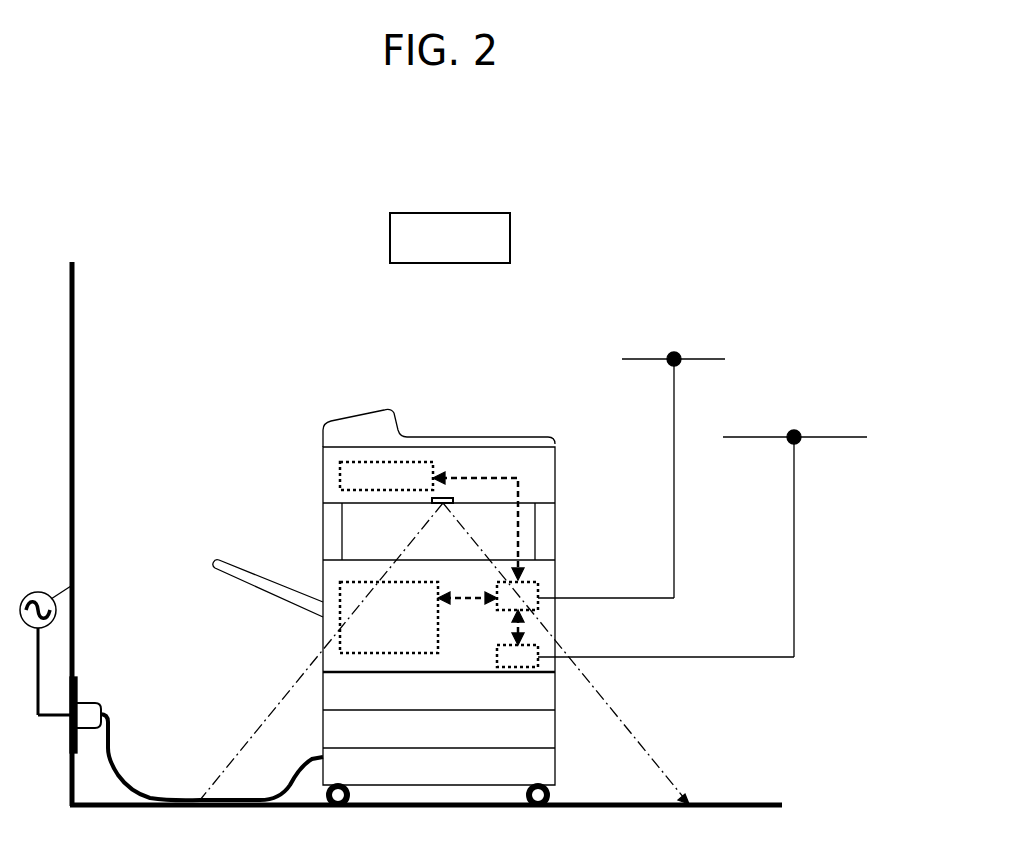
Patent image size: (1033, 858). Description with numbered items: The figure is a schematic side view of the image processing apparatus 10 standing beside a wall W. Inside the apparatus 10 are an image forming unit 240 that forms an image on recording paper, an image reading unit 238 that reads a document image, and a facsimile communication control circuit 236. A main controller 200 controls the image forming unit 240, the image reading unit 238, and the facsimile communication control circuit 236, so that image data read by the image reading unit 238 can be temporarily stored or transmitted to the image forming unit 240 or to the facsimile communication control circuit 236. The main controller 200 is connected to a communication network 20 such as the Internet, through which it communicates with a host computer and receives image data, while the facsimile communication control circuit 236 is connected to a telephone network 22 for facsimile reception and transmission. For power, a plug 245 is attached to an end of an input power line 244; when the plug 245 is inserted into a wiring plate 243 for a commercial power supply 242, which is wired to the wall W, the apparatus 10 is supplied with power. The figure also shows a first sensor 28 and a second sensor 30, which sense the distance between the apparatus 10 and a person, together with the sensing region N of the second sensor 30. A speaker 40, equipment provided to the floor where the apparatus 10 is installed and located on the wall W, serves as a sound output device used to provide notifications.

The wall W is at (74, 407).
The image processing apparatus 10 is at (337, 394).
The communication network 20 is at (648, 357).
The telephone network 22 is at (838, 437).
The speaker 40 is at (510, 238).
The first sensor 28 is at (399, 519).
The second sensor 30 is at (440, 504).
The image reading unit 238 is at (340, 478).
The image forming unit 240 is at (340, 660).
The main controller 200 is at (540, 586).
The facsimile communication control circuit 236 is at (545, 667).
The sensing region N is at (634, 722).
The commercial power supply 242 is at (72, 592).
The wiring plate 243 is at (80, 684).
The plug 245 is at (100, 702).
The input power line 244 is at (140, 792).